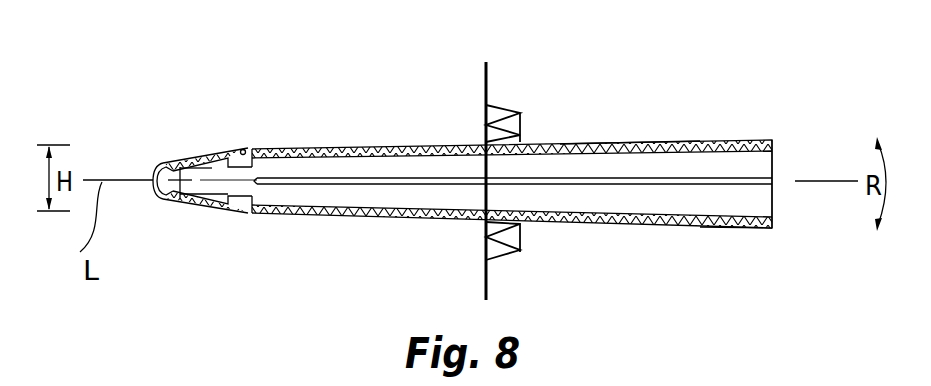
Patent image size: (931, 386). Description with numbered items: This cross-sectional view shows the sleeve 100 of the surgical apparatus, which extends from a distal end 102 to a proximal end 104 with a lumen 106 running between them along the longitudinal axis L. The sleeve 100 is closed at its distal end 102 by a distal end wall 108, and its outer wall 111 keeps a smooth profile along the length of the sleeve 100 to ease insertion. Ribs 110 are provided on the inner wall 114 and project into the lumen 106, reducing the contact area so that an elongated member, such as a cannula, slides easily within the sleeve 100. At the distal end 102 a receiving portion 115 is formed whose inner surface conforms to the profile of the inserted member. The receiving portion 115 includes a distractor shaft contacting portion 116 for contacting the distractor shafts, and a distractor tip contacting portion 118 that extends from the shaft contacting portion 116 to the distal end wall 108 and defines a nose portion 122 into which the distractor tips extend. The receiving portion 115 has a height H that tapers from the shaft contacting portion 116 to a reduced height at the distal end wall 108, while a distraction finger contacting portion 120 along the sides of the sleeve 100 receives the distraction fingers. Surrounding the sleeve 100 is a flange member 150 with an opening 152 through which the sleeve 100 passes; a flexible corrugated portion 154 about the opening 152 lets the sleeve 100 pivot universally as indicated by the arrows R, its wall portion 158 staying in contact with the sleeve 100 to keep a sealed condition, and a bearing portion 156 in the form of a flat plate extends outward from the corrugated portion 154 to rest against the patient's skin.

The sleeve 100 is at (687, 142).
The distal end 102 is at (187, 202).
The proximal end 104 is at (763, 229).
The lumen 106 is at (697, 176).
The distal end wall 108 is at (158, 168).
The ribs 110 is at (775, 142).
The outer wall 111 is at (607, 140).
The inner wall 114 is at (362, 151).
The receiving portion 115 is at (210, 218).
The distractor shaft contacting portion 116 is at (247, 151).
The distractor tip contacting portion 118 is at (193, 170).
The distraction finger contacting portion 120 is at (173, 191).
The nose portion 122 is at (183, 167).
The flange member 150 is at (488, 67).
The opening 152 is at (485, 223).
The corrugated portion 154 is at (520, 113).
The bearing portion 156 is at (488, 280).
The wall portion 158 is at (484, 139).